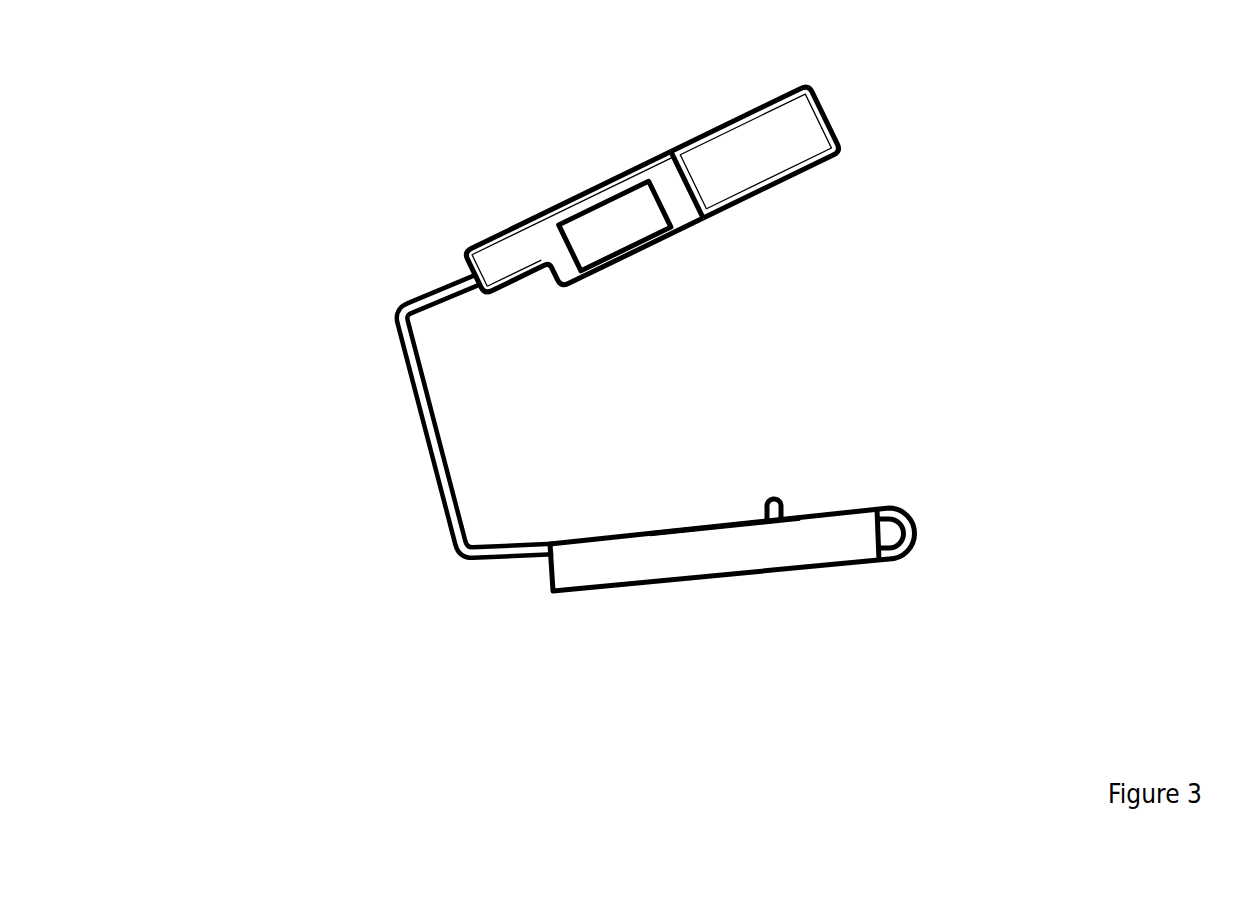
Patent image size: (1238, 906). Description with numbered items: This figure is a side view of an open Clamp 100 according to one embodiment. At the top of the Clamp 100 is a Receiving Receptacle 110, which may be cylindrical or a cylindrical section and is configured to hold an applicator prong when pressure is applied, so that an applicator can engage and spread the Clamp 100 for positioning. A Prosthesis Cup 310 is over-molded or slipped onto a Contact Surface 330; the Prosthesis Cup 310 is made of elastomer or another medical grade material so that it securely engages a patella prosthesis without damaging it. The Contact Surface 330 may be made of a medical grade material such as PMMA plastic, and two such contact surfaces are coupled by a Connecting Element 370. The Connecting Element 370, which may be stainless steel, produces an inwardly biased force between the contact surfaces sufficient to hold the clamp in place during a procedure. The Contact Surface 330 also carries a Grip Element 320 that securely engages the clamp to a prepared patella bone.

The clamp 100 is at (732, 619).
The receiving receptacle 110 is at (610, 211).
The prosthesis cup 310 is at (694, 243).
The grip element 320 is at (792, 488).
The contact surface 330 is at (531, 287).
The connecting element 370 is at (441, 486).